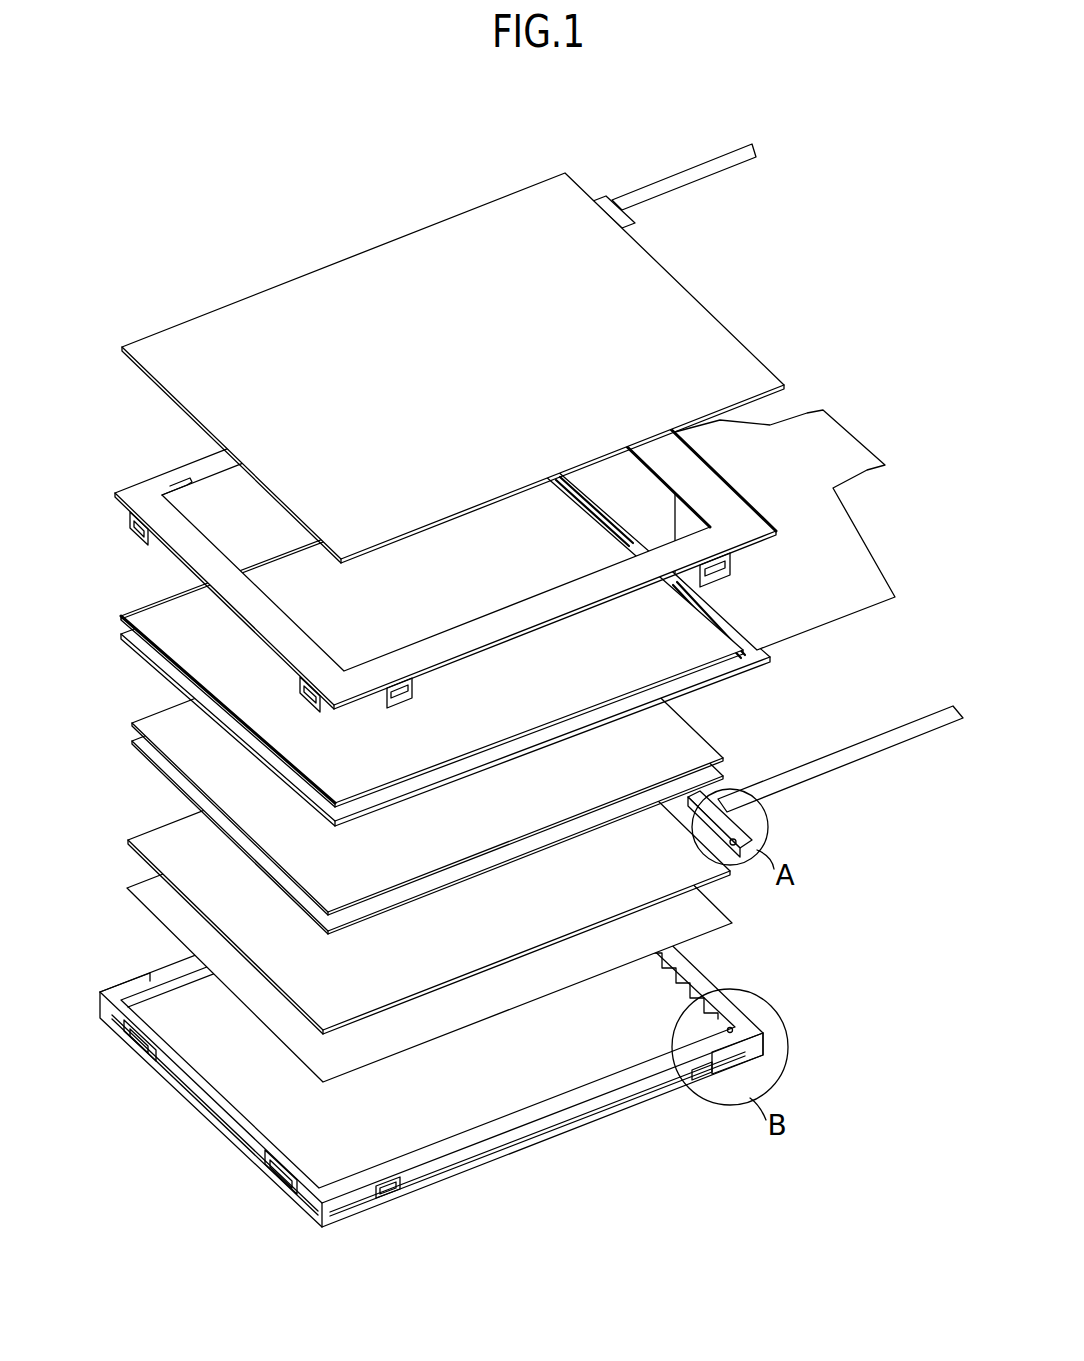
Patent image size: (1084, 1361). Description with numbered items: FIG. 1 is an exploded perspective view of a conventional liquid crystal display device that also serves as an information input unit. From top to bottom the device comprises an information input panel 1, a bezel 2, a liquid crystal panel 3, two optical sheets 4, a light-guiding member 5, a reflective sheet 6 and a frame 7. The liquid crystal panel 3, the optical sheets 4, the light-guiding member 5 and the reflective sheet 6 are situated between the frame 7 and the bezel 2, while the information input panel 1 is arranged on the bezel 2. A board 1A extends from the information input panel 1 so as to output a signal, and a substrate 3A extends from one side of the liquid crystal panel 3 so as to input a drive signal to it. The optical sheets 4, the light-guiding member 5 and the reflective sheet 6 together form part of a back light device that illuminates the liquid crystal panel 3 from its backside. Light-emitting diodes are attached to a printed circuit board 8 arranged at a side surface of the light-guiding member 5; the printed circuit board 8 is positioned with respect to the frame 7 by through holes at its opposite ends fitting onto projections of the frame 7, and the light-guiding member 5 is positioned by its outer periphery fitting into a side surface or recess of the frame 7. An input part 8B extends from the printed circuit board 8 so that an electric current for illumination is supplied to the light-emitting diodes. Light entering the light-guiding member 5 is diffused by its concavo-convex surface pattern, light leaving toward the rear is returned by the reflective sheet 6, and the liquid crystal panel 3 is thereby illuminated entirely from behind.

The information input panel 1 is at (203, 321).
The board 1A is at (664, 181).
The bezel 2 is at (146, 494).
The liquid crystal panel 3 is at (165, 610).
The substrate 3A is at (825, 423).
The optical sheets 4 is at (133, 748).
The light-guiding member 5 is at (167, 833).
The reflective sheet 6 is at (453, 1013).
The frame 7 is at (577, 1101).
The printed circuit board 8 is at (735, 832).
The input part 8B is at (870, 748).